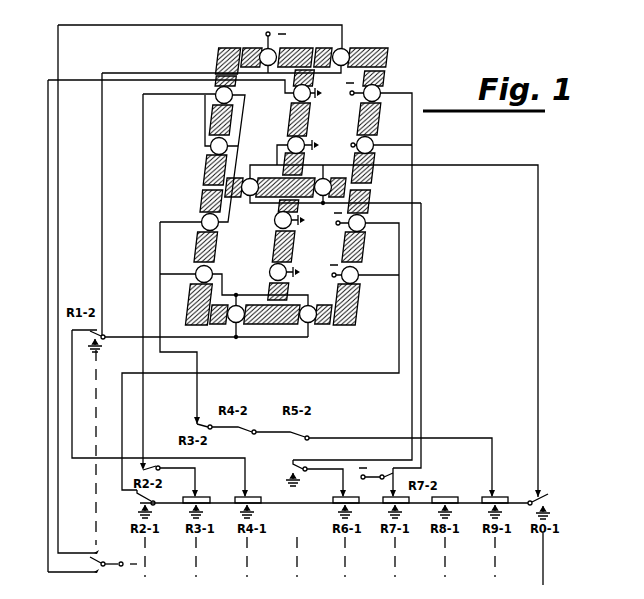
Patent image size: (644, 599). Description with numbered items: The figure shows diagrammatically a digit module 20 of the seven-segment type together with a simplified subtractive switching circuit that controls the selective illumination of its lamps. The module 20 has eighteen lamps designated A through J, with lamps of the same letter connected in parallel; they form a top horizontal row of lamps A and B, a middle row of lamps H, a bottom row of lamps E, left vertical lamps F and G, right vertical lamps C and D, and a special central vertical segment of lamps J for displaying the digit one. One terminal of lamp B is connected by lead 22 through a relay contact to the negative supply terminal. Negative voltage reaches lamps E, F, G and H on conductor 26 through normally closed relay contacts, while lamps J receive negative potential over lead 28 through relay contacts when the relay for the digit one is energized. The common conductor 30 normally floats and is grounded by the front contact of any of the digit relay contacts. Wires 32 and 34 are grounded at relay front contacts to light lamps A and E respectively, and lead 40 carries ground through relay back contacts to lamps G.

The digit module 20 is at (392, 77).
The lead 22 is at (58, 528).
The conductor 26 is at (422, 373).
The lead 28 is at (48, 337).
The common conductor 30 is at (299, 508).
The wire 32 is at (102, 260).
The wire 34 is at (247, 346).
The lead 40 is at (143, 250).